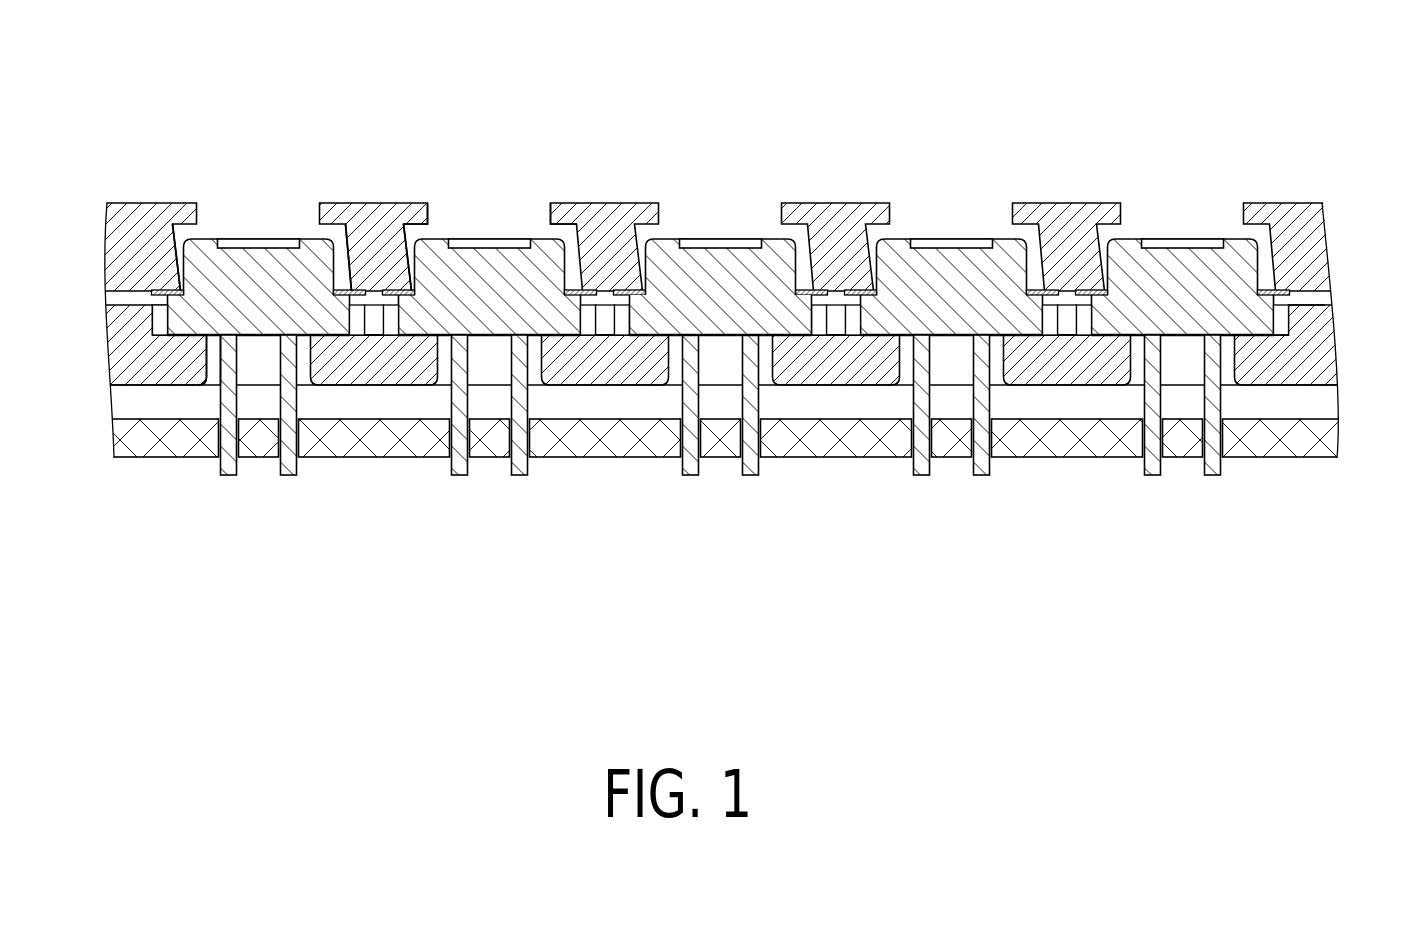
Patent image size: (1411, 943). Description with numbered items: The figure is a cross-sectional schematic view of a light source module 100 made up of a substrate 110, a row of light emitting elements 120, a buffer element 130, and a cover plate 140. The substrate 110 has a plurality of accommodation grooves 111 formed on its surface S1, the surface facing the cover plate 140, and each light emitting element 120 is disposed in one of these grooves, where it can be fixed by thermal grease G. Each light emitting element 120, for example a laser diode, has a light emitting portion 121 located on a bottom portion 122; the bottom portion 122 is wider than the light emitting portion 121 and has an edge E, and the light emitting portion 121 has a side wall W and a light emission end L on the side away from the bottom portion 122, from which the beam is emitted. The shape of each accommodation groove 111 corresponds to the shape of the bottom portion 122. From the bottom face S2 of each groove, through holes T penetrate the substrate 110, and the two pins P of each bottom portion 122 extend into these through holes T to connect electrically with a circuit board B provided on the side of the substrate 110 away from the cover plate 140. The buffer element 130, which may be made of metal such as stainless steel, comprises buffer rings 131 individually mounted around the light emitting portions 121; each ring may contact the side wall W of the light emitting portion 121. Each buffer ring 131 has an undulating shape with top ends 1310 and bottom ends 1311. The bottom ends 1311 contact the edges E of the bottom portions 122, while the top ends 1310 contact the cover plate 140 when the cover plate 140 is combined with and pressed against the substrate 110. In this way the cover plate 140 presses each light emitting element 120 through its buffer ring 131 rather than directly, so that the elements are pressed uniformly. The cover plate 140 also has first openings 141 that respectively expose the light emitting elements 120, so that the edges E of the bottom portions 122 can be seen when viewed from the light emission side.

The light source module 100 is at (107, 57).
The substrate 110 is at (130, 347).
The accommodation groove 111 is at (358, 337).
The light emitting element 120 is at (721, 192).
The light emitting portion 121 is at (706, 270).
The bottom portion 122 is at (762, 320).
The buffer element 130 is at (262, 179).
The buffer ring 131 is at (262, 179).
The top end 1310 is at (349, 289).
The bottom end 1311 is at (177, 289).
The cover plate 140 is at (128, 252).
The first opening 141 is at (514, 212).
The side wall W is at (409, 266).
The light emission end L is at (472, 238).
The edge E is at (160, 298).
The thermal grease G is at (170, 338).
The through hole T is at (212, 380).
The pin P is at (288, 466).
The circuit board B is at (1315, 436).
The surface S1 is at (1314, 302).
The bottom face S2 is at (1280, 340).